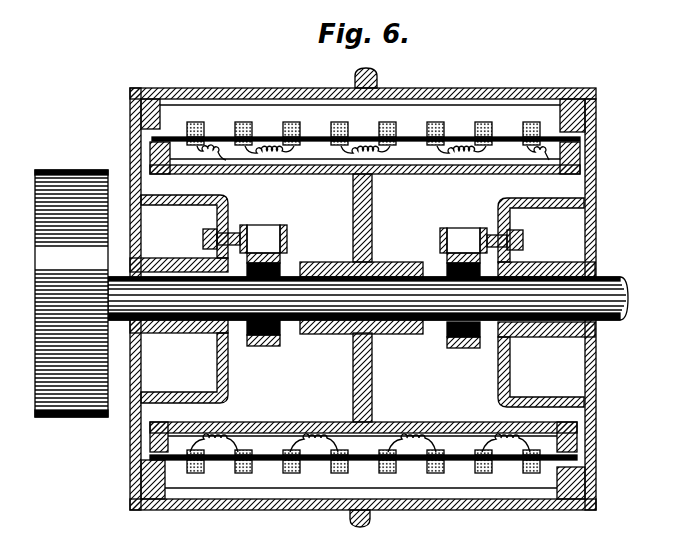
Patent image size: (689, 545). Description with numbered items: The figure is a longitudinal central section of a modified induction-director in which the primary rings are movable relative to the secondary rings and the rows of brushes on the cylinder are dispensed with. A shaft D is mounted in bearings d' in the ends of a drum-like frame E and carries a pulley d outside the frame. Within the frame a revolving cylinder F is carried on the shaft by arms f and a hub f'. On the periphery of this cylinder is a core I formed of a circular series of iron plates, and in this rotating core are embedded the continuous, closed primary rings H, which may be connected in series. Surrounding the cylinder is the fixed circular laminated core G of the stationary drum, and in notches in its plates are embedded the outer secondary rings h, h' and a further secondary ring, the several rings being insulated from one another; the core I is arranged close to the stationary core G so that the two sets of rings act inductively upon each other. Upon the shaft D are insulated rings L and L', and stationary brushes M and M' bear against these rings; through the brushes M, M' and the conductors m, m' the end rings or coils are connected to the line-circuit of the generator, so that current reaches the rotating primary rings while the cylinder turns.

The drum-like frame E is at (363, 294).
The shaft D is at (630, 298).
The pulley d is at (71, 293).
The bearings d' is at (362, 282).
The arms f is at (371, 298).
The hub f' is at (361, 313).
The revolving cylinder F is at (365, 172).
The fixed circular laminated core G is at (366, 123).
The primary rings H is at (432, 147).
The core I is at (320, 155).
The secondary ring h is at (363, 291).
The secondary ring h' is at (256, 123).
The brush M is at (271, 226).
The brush M' is at (479, 217).
The conductor m is at (221, 239).
The conductor m' is at (505, 240).
The insulated ring L is at (263, 346).
The insulated ring L' is at (463, 349).